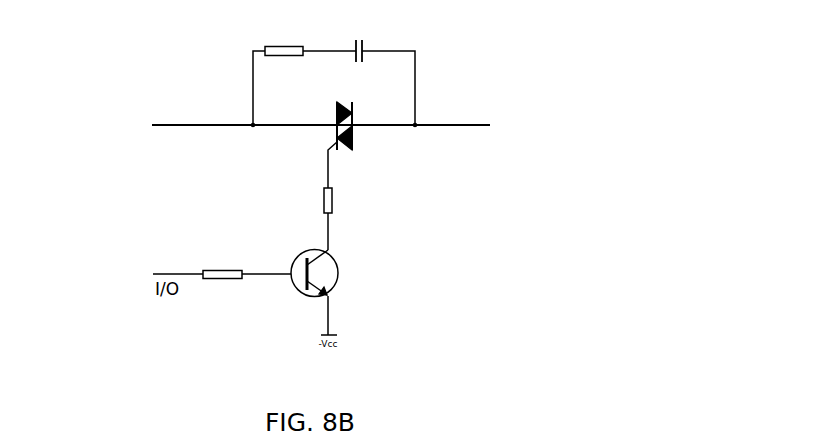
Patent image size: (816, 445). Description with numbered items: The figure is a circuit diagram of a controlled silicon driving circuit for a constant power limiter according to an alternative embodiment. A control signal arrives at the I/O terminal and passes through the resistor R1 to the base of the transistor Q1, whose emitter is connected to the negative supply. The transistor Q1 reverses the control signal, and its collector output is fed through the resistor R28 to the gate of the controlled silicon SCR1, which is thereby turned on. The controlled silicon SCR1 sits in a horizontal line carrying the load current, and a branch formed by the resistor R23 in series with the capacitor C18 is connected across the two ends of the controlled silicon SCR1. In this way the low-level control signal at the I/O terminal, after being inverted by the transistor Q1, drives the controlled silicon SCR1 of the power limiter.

The resistor R23 is at (284, 42).
The capacitor C18 is at (363, 43).
The controlled silicon SCR1 is at (346, 132).
The resistor R28 is at (342, 219).
The transistor Q1 is at (322, 293).
The resistor R1 is at (222, 269).